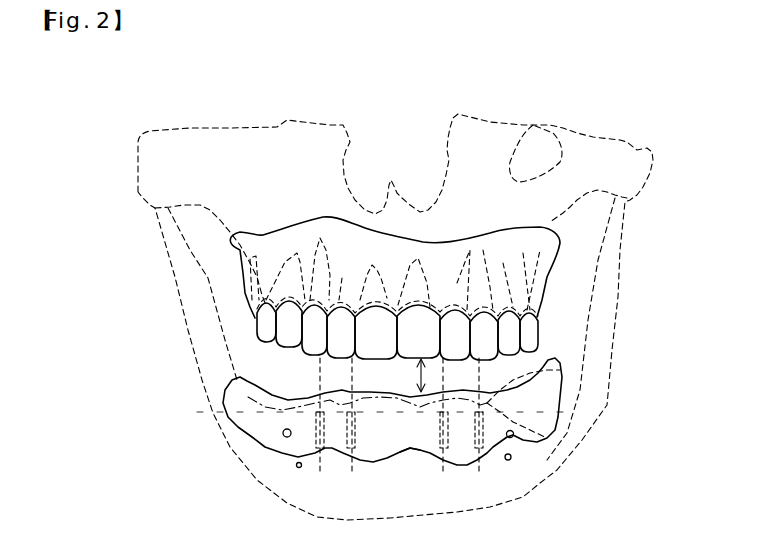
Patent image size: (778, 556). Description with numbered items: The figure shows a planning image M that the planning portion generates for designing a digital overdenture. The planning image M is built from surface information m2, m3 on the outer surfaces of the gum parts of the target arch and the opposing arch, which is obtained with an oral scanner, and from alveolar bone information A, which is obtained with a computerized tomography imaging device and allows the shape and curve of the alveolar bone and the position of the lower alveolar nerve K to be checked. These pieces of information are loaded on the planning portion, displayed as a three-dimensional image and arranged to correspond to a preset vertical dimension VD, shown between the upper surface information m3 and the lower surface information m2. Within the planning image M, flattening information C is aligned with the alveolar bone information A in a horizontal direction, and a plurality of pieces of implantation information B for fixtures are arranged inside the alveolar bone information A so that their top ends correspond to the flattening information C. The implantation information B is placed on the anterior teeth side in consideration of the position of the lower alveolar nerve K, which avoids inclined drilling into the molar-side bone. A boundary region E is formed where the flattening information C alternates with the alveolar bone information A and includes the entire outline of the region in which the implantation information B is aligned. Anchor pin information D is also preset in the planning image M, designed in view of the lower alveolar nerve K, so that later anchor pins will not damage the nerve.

The planning image M is at (128, 97).
The surface information m3 is at (547, 325).
The surface information m2 is at (568, 386).
The alveolar bone information A is at (540, 368).
The vertical dimension VD is at (418, 375).
The implantation information B is at (448, 420).
The flattening information C is at (418, 400).
The boundary region E is at (497, 412).
The lower alveolar nerve K is at (512, 460).
The anchor pin information D is at (284, 437).